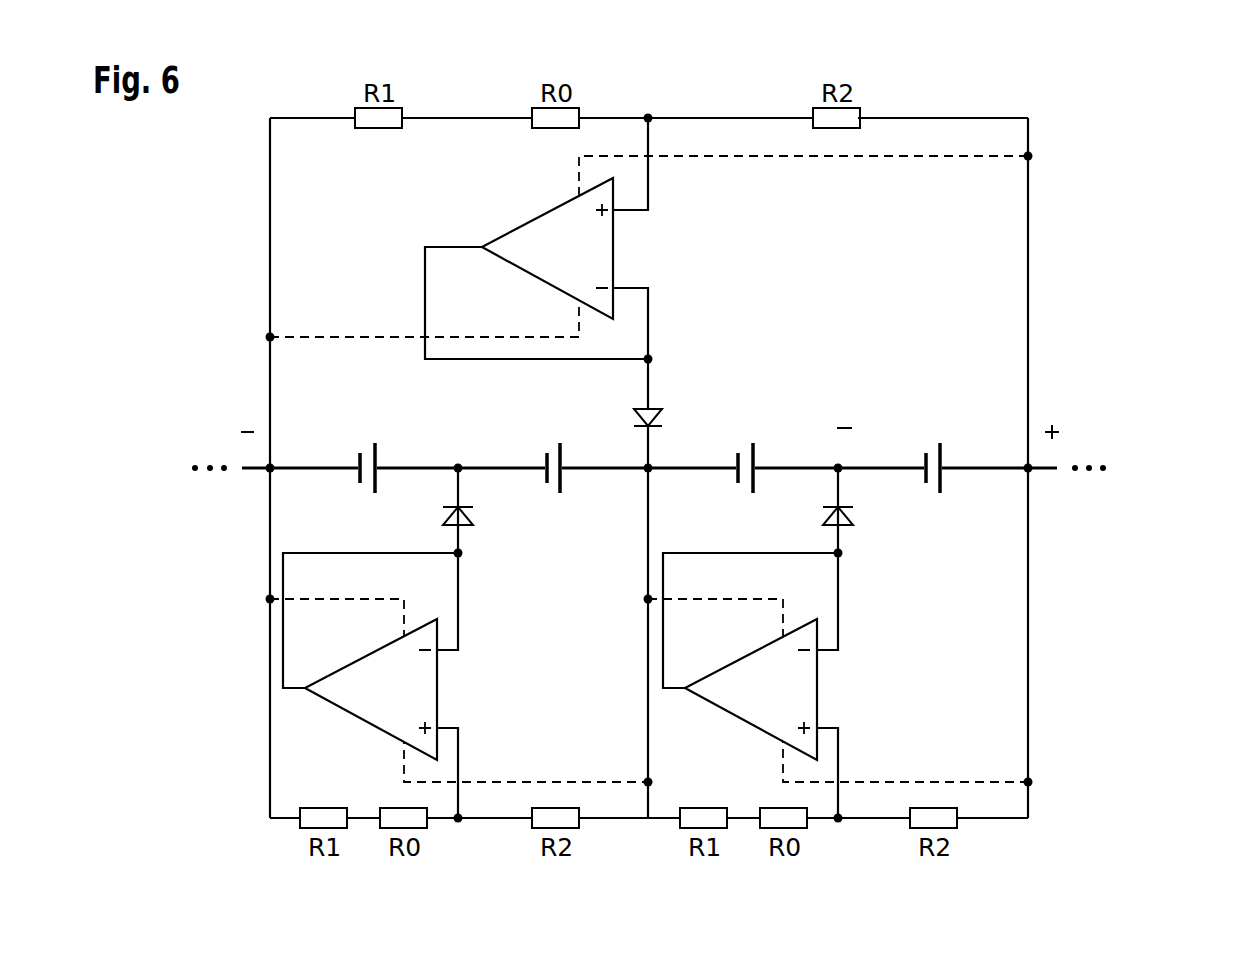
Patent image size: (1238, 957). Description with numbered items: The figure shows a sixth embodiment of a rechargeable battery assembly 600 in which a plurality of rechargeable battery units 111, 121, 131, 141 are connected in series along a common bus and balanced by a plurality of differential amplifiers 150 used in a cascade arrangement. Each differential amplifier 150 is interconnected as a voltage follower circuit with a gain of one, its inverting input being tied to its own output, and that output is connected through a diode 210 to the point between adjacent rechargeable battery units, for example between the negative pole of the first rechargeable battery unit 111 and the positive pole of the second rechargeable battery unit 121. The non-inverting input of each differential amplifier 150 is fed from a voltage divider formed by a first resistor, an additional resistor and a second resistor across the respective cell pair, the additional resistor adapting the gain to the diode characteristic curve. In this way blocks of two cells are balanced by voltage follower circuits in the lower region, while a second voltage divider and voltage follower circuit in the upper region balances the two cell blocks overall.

The rechargeable battery assembly 600 is at (1052, 268).
The differential amplifier 150 is at (613, 247).
The diode 210 is at (663, 415).
The second rechargeable battery unit 121 is at (358, 462).
The first rechargeable battery unit 111 is at (562, 477).
The rechargeable battery unit 141 is at (757, 463).
The rechargeable battery unit 131 is at (943, 477).